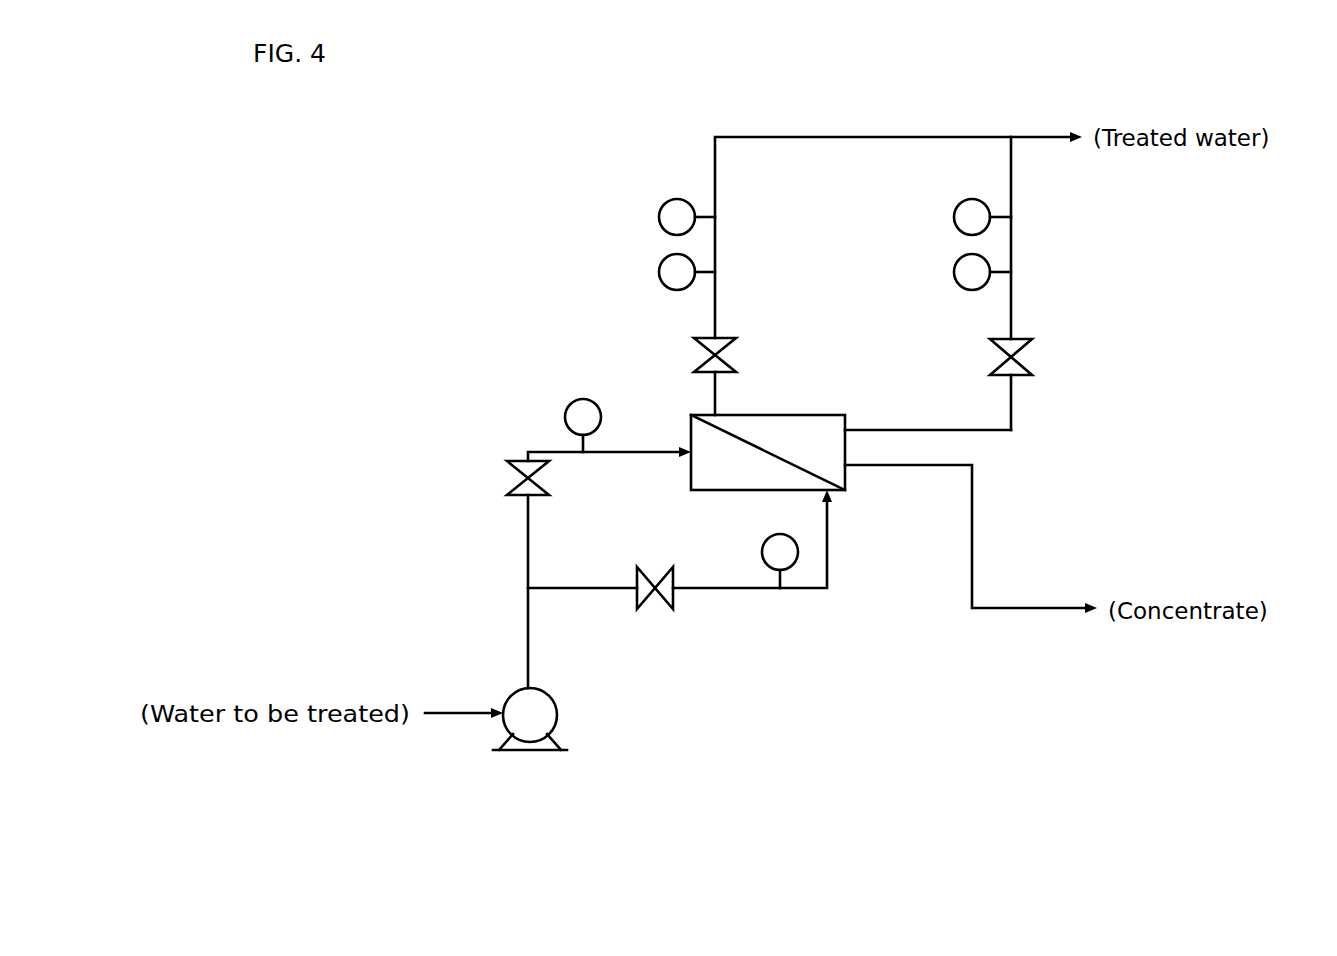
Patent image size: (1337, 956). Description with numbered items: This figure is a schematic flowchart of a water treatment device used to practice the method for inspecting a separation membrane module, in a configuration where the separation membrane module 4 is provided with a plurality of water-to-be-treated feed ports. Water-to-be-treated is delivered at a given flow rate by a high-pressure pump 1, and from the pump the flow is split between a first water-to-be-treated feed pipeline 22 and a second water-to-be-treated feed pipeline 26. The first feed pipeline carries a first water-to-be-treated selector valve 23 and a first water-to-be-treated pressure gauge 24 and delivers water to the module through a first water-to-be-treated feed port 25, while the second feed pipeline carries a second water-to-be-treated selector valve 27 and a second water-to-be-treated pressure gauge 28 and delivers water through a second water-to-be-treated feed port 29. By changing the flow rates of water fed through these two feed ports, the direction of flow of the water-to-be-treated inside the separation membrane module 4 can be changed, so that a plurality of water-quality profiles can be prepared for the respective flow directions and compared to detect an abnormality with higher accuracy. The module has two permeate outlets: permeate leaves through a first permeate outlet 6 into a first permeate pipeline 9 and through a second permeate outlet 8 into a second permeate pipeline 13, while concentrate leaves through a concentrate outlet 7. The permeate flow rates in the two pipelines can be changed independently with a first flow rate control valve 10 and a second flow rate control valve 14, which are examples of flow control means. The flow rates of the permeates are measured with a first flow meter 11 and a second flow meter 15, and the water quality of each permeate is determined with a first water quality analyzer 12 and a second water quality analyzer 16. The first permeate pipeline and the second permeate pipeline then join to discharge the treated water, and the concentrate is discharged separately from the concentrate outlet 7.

The high-pressure pump 1 is at (530, 712).
The separation membrane module 4 is at (770, 425).
The first permeate outlet 6 is at (722, 410).
The concentrate outlet 7 is at (850, 468).
The second permeate outlet 8 is at (870, 432).
The first permeate pipeline 9 is at (716, 336).
The first flow rate control valve 10 is at (694, 358).
The first flow meter 11 is at (658, 270).
The first water quality analyzer 12 is at (658, 213).
The second permeate pipeline 13 is at (1015, 432).
The second flow rate control valve 14 is at (1033, 352).
The second flow meter 15 is at (953, 270).
The second water quality analyzer 16 is at (953, 213).
The first water-to-be-treated feed pipeline 22 is at (526, 565).
The first water-to-be-treated selector valve 23 is at (508, 490).
The first water-to-be-treated pressure gauge 24 is at (566, 412).
The first water-to-be-treated feed port 25 is at (680, 432).
The second water-to-be-treated feed pipeline 26 is at (616, 600).
The second water-to-be-treated selector valve 27 is at (680, 600).
The second water-to-be-treated pressure gauge 28 is at (762, 555).
The second water-to-be-treated feed port 29 is at (830, 498).